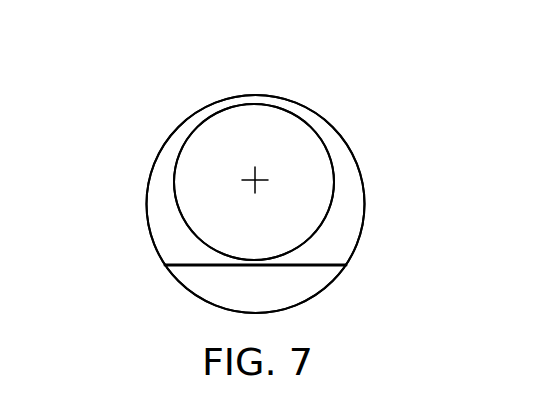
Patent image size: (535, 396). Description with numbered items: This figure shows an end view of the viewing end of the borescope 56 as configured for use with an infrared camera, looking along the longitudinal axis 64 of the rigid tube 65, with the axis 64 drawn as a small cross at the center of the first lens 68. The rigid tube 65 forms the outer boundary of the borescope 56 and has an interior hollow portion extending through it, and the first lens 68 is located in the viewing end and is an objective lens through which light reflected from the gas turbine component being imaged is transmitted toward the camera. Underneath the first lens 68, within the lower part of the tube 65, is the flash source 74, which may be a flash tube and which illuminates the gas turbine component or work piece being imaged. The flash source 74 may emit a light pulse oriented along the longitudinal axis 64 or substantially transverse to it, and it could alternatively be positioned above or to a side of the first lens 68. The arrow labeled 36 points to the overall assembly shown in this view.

The nozzle body 36 is at (379, 131).
The borescope 56 is at (165, 130).
The rigid tube 65 is at (302, 103).
The first lens 68 is at (202, 190).
The longitudinal axis 64 is at (255, 193).
The flash source 74 is at (292, 292).